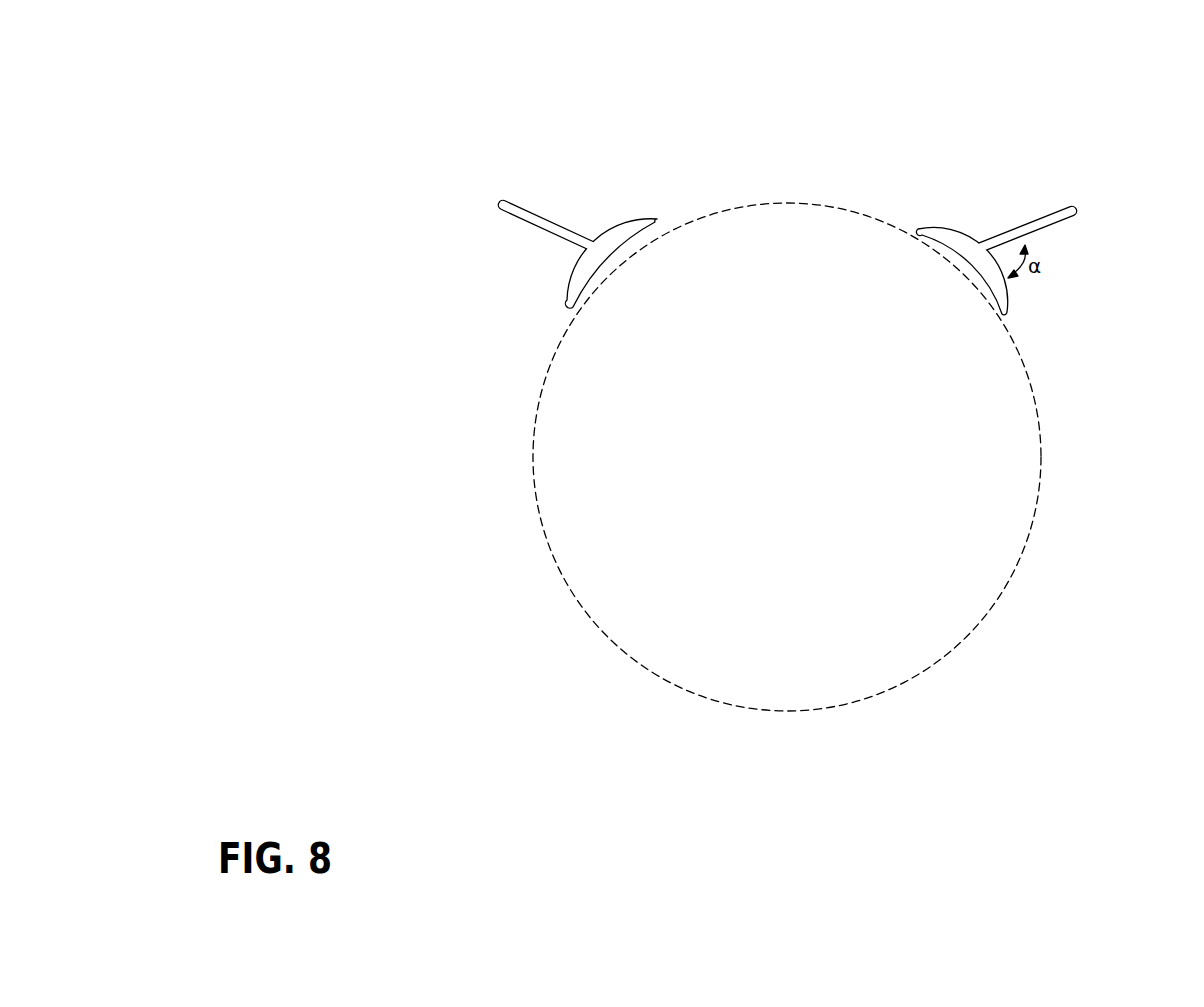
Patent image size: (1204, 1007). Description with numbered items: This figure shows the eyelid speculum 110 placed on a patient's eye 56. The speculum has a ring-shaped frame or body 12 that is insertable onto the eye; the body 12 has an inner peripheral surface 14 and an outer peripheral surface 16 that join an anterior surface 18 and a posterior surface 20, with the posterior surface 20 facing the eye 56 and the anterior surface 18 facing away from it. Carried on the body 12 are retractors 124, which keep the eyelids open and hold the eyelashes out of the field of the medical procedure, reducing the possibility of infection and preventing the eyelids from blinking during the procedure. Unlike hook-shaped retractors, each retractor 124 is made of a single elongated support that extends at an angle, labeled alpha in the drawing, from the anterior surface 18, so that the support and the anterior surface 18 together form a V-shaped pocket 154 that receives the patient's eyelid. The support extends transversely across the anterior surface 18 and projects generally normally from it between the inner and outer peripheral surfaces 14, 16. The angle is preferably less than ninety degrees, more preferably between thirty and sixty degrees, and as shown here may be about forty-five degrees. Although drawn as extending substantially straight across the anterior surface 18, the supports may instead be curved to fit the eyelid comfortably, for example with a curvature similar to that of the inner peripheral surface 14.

The eyelid speculum 110 is at (478, 81).
The body 12 is at (1023, 221).
The inner peripheral surface 14 is at (656, 219).
The outer peripheral surface 16 is at (570, 308).
The anterior surface 18 is at (582, 263).
The posterior surface 20 is at (592, 282).
The patient's eye 56 is at (797, 433).
The retractor 124 is at (540, 218).
The V-shaped pocket 154 is at (560, 251).